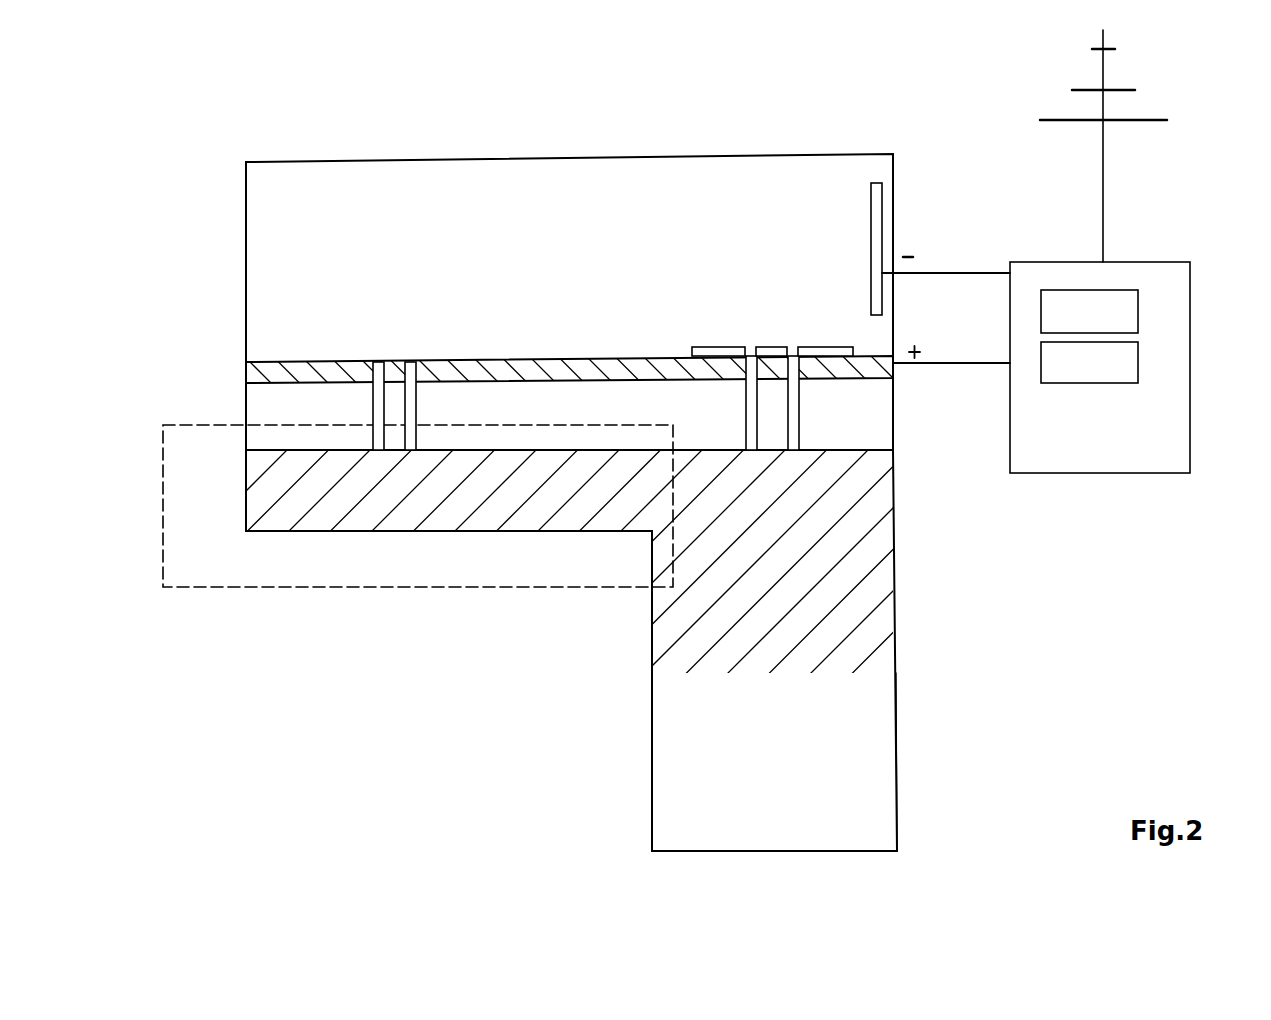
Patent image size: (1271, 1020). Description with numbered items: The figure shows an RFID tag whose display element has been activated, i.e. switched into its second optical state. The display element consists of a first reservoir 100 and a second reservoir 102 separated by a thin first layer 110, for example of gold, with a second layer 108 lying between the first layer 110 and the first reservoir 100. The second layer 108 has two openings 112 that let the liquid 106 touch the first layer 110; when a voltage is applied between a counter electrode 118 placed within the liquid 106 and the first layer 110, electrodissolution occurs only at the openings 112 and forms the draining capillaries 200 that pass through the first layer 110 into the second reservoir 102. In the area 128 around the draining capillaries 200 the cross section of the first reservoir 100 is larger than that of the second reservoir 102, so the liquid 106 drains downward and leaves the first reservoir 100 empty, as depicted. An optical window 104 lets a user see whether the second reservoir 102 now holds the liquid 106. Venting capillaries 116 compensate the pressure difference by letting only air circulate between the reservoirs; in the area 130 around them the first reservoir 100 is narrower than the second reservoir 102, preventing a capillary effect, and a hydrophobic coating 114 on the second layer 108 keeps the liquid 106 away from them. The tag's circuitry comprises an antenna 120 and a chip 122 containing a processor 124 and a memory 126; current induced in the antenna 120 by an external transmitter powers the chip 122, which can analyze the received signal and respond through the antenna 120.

The first reservoir 100 is at (246, 232).
The second reservoir 102 is at (246, 500).
The optical window 104 is at (225, 590).
The liquid 106 is at (868, 567).
The second layer 108 is at (246, 370).
The first layer 110 is at (246, 400).
The openings 112 is at (412, 360).
The hydrophobic coating 114 is at (704, 345).
The venting capillaries 116 is at (790, 345).
The counter electrode 118 is at (884, 195).
The antenna 120 is at (1105, 155).
The chip 122 is at (1121, 475).
The processor 124 is at (1118, 385).
The memory 126 is at (1140, 305).
The area around the draining capillary 128 is at (868, 706).
The area around the venting capillaries 130 is at (493, 515).
The draining capillaries 200 is at (412, 452).